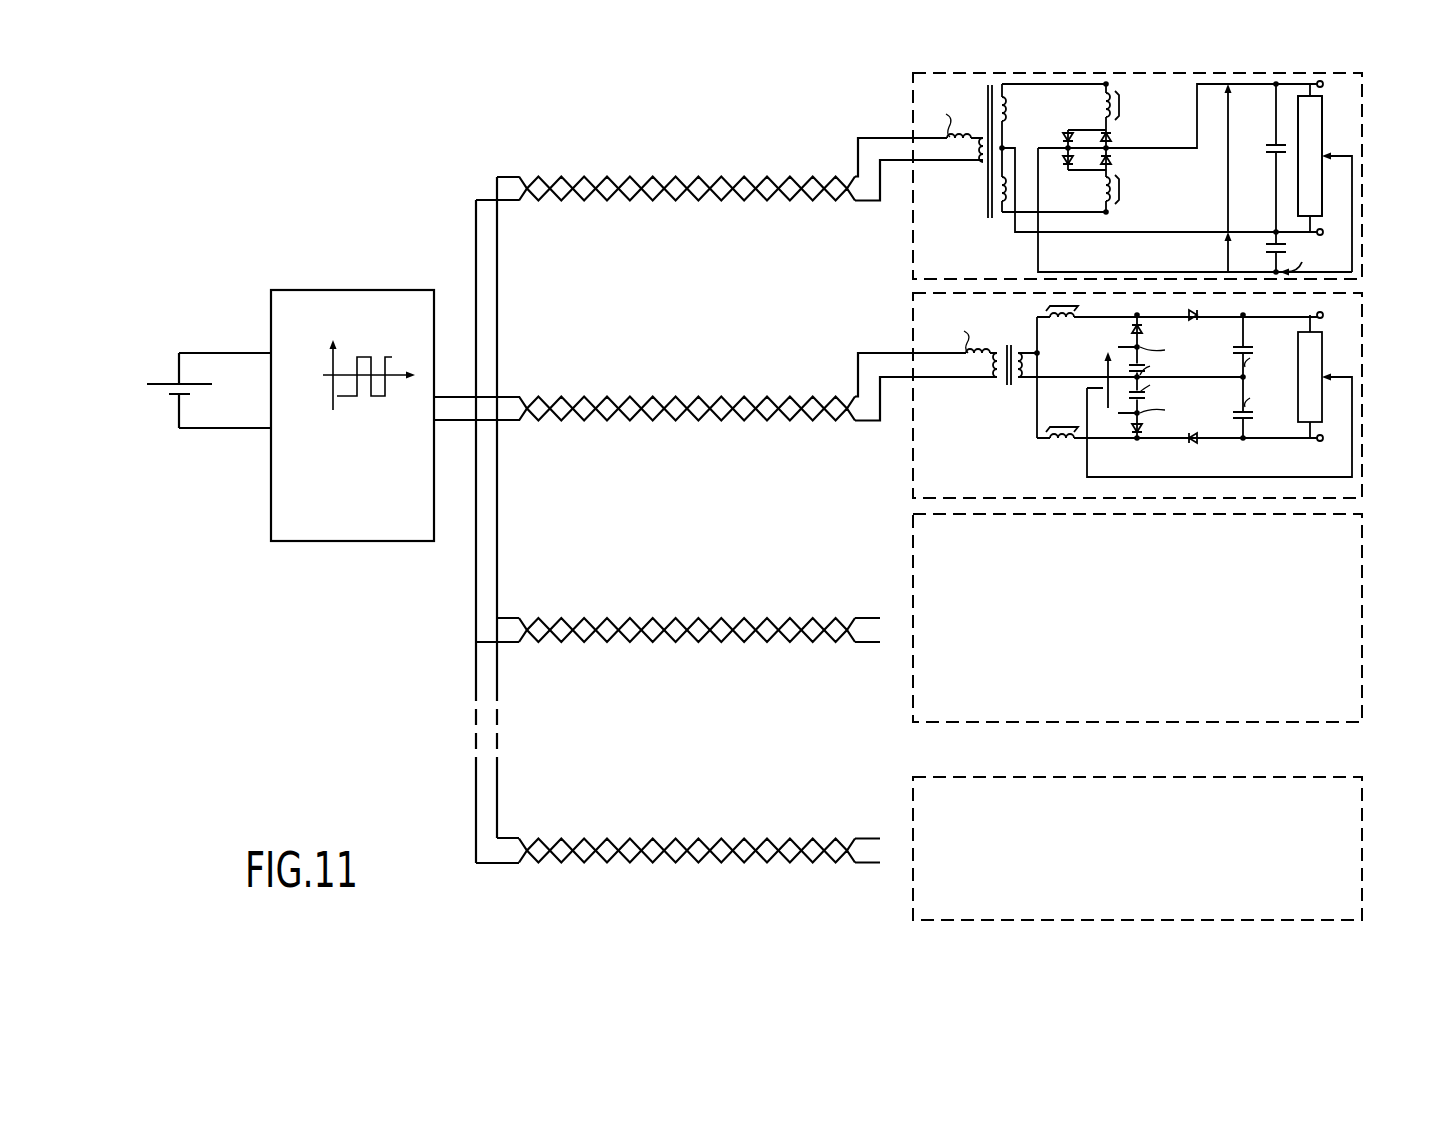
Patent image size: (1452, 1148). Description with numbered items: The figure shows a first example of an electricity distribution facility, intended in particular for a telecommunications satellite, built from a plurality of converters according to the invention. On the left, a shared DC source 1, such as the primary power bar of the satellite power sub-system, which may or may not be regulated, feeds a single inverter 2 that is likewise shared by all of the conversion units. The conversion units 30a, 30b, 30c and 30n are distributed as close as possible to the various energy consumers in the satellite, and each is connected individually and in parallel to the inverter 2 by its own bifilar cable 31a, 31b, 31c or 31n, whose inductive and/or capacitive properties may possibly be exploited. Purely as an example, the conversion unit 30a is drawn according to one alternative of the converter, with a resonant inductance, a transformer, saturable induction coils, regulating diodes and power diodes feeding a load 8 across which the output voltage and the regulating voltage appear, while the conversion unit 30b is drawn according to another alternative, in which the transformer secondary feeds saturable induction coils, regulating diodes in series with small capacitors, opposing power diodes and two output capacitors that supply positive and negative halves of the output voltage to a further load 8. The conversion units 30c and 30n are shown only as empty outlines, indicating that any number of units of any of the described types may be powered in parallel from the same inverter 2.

The DC source 1 is at (172, 408).
The inverter 2 is at (308, 290).
The load 8 is at (1323, 136).
The conversion unit 30a is at (1366, 106).
The conversion unit 30b is at (1366, 328).
The conversion unit 30c is at (1366, 548).
The conversion unit 30n is at (1366, 811).
The bifilar cable 31a is at (631, 177).
The bifilar cable 31b is at (631, 397).
The bifilar cable 31c is at (631, 618).
The bifilar cable 31n is at (631, 838).